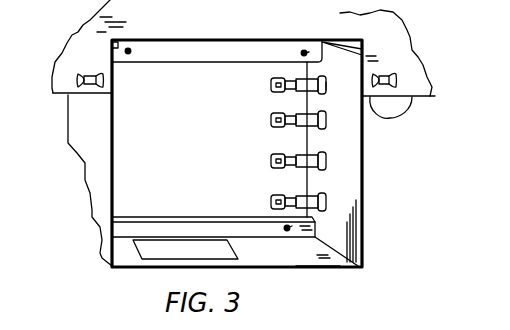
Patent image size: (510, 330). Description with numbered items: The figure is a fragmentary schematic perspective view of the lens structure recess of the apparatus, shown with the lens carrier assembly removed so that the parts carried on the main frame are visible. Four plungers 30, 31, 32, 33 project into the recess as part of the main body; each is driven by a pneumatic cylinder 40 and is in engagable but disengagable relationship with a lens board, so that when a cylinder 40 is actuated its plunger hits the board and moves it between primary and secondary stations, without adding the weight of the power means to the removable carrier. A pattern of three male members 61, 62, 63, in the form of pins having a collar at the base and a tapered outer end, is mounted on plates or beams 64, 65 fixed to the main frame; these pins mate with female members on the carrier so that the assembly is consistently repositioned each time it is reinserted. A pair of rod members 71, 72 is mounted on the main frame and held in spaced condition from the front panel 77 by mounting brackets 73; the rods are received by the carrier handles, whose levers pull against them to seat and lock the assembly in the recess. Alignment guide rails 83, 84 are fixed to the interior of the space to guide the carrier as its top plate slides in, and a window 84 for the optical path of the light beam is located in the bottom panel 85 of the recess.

The plunger 30 is at (270, 86).
The plunger 31 is at (270, 120).
The plunger 32 is at (270, 161).
The plunger 33 is at (270, 202).
The pneumatic cylinder 40 is at (327, 87).
The male member 61 is at (307, 50).
The male member 62 is at (132, 51).
The male member 63 is at (287, 231).
The plate 64 is at (222, 62).
The plate 65 is at (188, 233).
The rod member 71 is at (92, 72).
The rod member 72 is at (393, 72).
The mounting bracket 73 is at (66, 91).
The front panel 77 is at (80, 33).
The alignment guide rail 83 is at (363, 51).
The alignment guide rail 84 is at (236, 257).
The bottom panel 85 is at (302, 258).